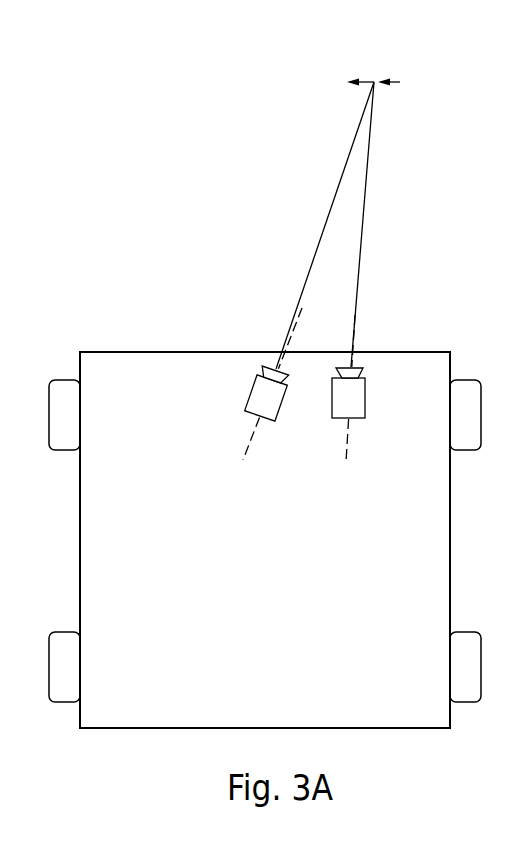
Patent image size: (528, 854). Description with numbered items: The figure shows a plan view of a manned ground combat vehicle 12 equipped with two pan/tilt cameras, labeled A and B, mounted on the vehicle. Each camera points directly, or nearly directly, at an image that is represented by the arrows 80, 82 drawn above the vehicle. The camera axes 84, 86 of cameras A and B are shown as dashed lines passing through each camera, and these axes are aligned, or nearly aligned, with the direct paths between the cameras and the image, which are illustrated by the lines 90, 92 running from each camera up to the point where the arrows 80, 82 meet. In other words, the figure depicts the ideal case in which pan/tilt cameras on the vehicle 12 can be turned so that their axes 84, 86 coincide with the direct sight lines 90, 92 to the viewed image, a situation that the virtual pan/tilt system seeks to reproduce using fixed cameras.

The ground combat vehicle 12 is at (130, 340).
The arrow representing the image 80 is at (370, 81).
The arrow representing the image 82 is at (394, 80).
The camera axis 84 is at (300, 320).
The camera axis 86 is at (354, 320).
The direct path line 90 is at (340, 178).
The direct path line 92 is at (368, 172).